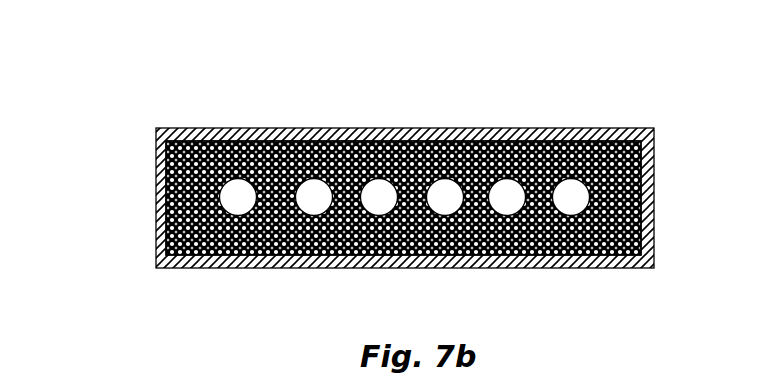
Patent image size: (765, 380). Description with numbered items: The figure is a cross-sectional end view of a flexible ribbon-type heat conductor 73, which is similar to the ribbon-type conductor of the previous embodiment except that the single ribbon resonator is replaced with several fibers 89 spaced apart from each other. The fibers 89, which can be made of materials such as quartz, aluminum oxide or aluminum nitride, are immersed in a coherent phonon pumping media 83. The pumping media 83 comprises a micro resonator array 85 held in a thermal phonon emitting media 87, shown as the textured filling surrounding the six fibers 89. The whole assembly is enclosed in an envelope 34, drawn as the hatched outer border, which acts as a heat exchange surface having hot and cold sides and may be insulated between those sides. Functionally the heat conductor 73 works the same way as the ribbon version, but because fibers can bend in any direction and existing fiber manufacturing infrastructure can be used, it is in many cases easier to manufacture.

The ribbon-type heat conductor 73 is at (175, 80).
The envelope 34 is at (222, 128).
The coherent phonon pumping media 83 is at (440, 128).
The micro resonator array 85 is at (260, 250).
The thermal phonon emitting media 87 is at (172, 194).
The fibers 89 is at (505, 197).